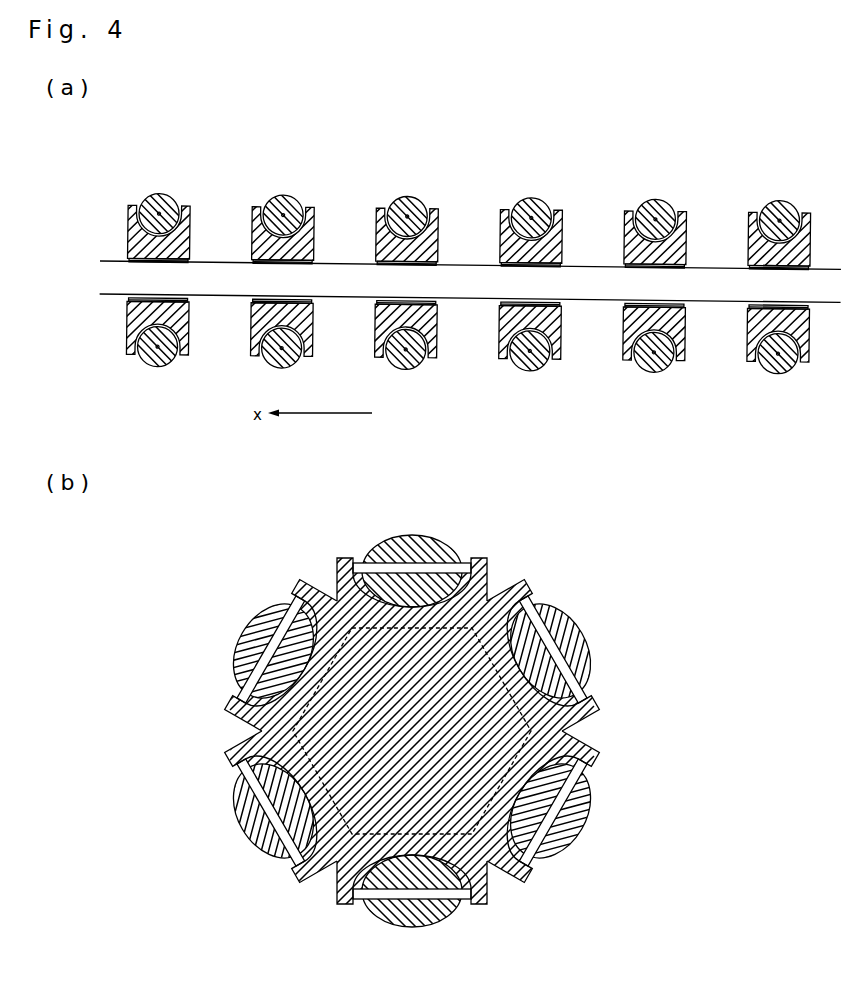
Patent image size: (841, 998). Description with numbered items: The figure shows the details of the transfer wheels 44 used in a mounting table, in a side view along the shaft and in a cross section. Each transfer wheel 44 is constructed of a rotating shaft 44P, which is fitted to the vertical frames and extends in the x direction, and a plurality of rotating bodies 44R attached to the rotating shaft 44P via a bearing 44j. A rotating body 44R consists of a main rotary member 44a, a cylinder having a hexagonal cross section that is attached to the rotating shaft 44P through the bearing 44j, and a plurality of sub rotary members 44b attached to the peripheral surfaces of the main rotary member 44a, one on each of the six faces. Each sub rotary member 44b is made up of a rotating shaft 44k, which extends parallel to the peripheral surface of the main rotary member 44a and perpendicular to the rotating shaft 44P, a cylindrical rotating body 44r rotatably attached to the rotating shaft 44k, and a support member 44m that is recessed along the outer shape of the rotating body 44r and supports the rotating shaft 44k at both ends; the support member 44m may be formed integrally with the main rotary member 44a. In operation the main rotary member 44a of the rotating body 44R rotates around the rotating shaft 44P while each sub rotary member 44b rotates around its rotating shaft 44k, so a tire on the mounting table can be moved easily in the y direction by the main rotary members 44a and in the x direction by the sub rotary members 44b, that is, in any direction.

The transfer wheel 44 is at (582, 195).
The rotating body 44R is at (193, 230).
The rotating shaft 44P is at (331, 262).
The main rotary member 44a is at (420, 256).
The sub rotary member 44b is at (409, 198).
The bearing 44j is at (418, 265).
The rotating shaft 44k is at (240, 638).
The cylindrical rotating body 44r is at (240, 657).
The support member 44m is at (235, 718).